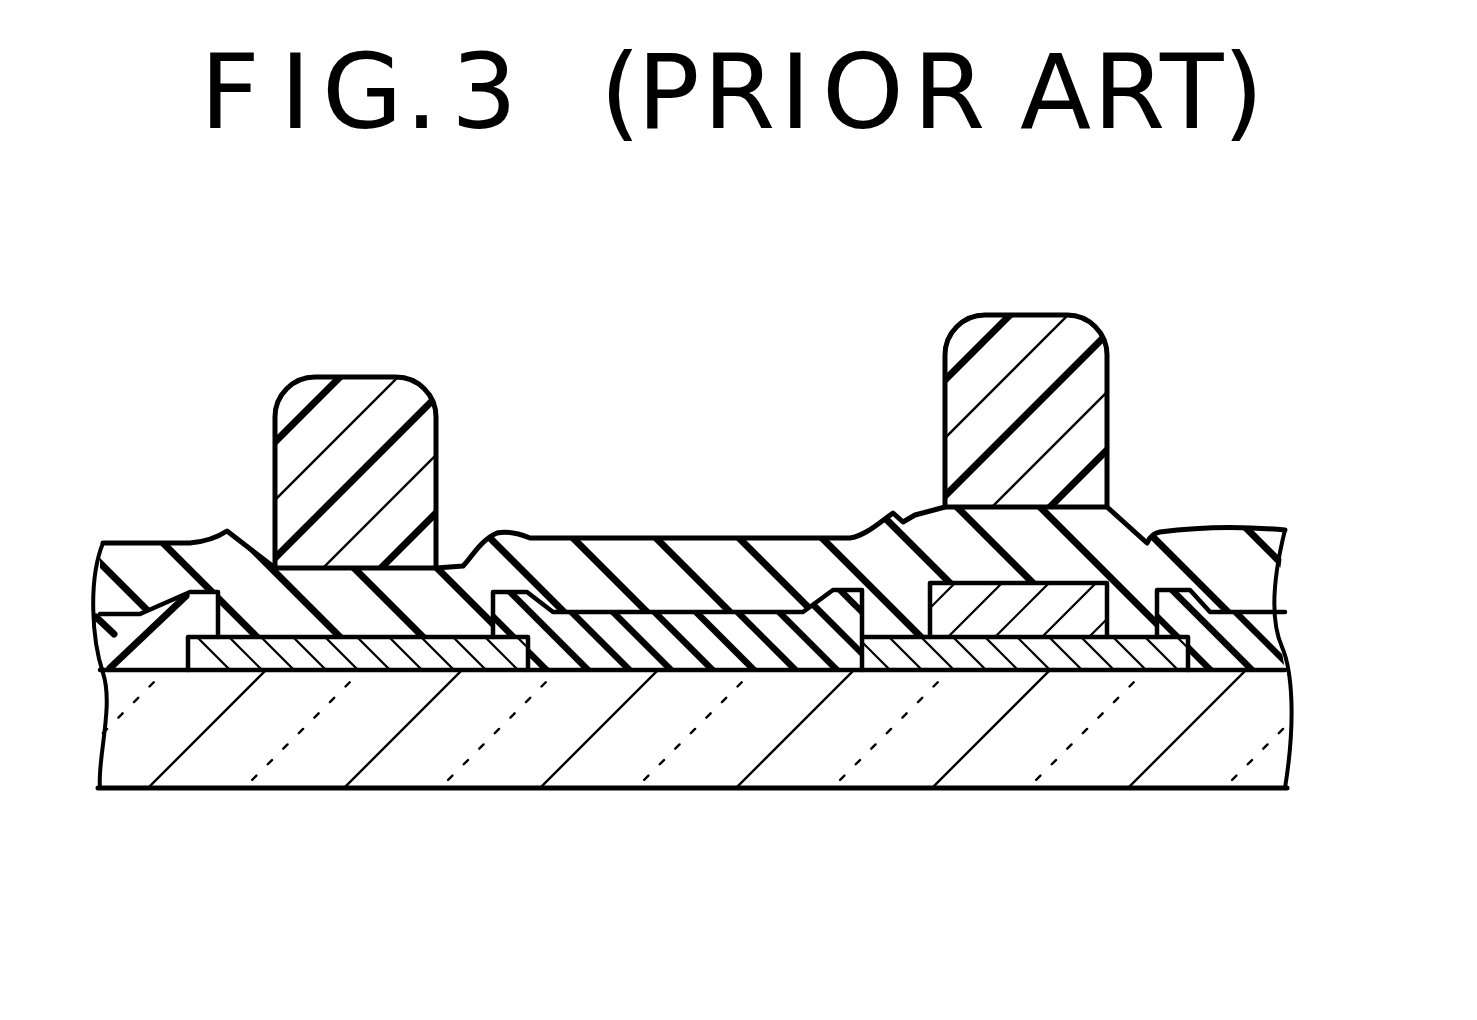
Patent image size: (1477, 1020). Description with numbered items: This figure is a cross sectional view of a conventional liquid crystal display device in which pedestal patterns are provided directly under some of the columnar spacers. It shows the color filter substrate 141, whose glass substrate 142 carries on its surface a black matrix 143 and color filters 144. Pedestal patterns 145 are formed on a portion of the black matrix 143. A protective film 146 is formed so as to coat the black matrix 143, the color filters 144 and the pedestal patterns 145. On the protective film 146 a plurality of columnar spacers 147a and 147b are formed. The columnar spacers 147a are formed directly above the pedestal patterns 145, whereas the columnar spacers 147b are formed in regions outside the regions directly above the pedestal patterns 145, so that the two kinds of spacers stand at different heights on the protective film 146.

The color filter substrate 141 is at (1255, 505).
The glass substrate 142 is at (1142, 735).
The black matrix 143 is at (312, 648).
The color filters 144 is at (152, 655).
The pedestal patterns 145 is at (1018, 622).
The protective film 146 is at (465, 618).
The columnar spacers 147a is at (1082, 368).
The columnar spacers 147b is at (412, 430).